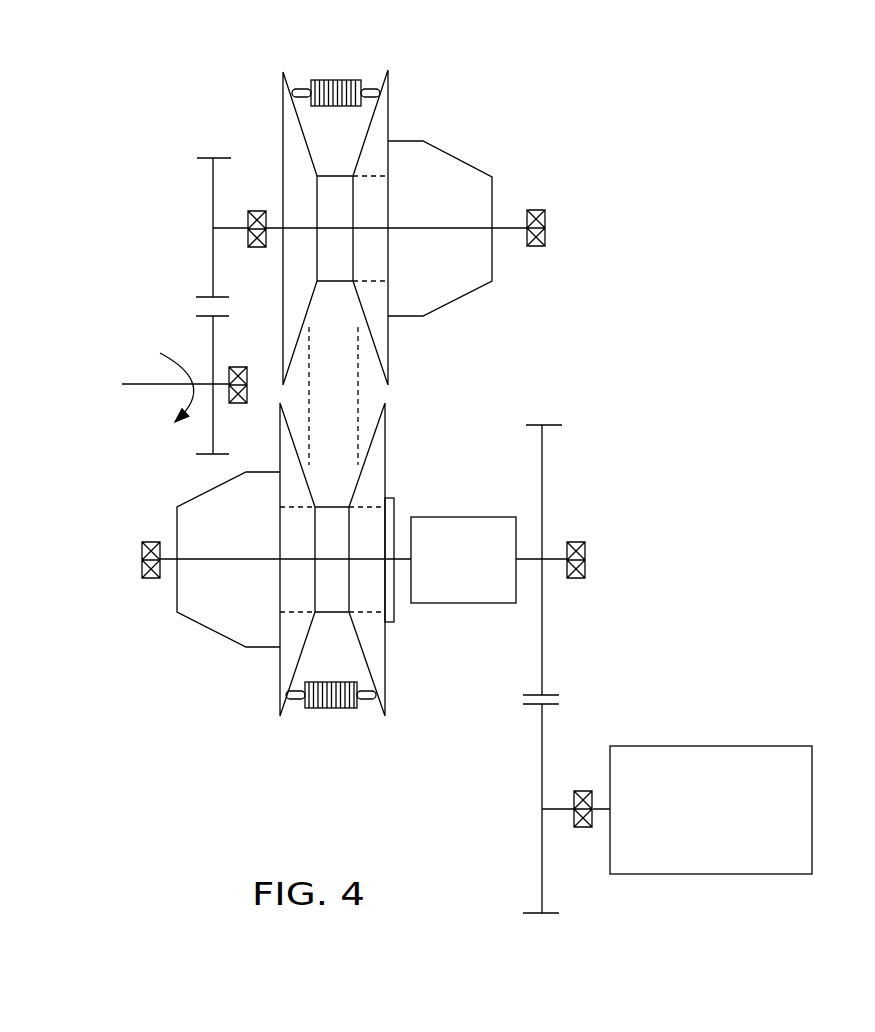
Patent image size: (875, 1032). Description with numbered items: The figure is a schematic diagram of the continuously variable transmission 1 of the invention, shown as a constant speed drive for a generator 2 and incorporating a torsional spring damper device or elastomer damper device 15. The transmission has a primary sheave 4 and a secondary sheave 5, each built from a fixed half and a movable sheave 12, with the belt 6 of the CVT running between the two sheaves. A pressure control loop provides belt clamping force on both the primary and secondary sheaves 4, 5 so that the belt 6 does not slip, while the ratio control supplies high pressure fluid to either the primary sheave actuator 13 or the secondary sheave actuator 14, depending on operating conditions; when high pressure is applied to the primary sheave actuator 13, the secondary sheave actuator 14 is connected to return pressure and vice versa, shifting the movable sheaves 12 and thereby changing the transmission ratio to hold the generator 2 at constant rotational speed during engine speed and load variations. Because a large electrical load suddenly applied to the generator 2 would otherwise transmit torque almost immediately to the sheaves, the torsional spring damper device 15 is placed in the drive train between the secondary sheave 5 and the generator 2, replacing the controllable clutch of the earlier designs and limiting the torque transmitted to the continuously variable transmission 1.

The continuously variable transmission 1 is at (708, 323).
The generator 2 is at (702, 746).
The primary sheave 4 is at (390, 112).
The secondary sheave 5 is at (280, 680).
The belt 6 is at (328, 83).
The movable sheave 12 is at (380, 333).
The primary sheave actuator 13 is at (487, 187).
The secondary sheave actuator 14 is at (185, 512).
The torsional spring damper device 15 is at (447, 517).